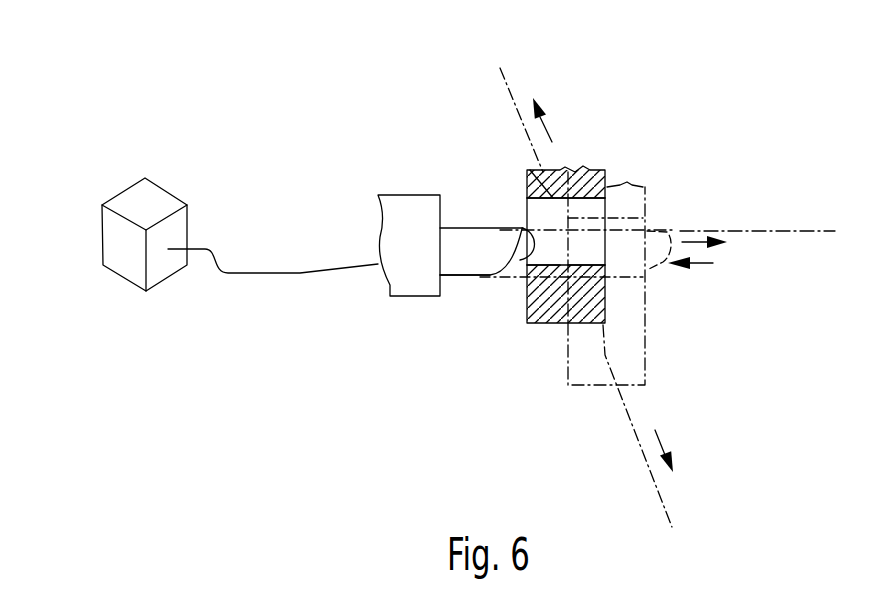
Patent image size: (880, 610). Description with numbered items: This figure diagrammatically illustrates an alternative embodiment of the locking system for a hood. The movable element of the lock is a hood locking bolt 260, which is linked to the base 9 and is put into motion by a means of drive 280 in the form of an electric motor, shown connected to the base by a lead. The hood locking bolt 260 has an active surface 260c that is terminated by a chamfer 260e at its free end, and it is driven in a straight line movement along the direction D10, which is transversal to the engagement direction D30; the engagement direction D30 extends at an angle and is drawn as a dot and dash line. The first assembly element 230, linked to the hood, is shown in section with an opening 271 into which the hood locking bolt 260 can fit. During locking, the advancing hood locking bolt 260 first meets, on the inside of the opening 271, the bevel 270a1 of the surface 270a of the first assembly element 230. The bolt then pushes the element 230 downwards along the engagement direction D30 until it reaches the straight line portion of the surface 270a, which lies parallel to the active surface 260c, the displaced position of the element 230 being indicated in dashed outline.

The means of drive 280 is at (133, 208).
The base 9 is at (404, 178).
The hood locking bolt 260 is at (458, 243).
The chamfer 260e is at (523, 227).
The active surface 260c is at (460, 275).
The first assembly element 230 is at (552, 343).
The opening 271 is at (547, 217).
The surface 270a is at (520, 292).
The bevel 270a1 is at (520, 270).
The engagement direction D30 is at (520, 105).
The straight line movement direction D10 is at (763, 227).